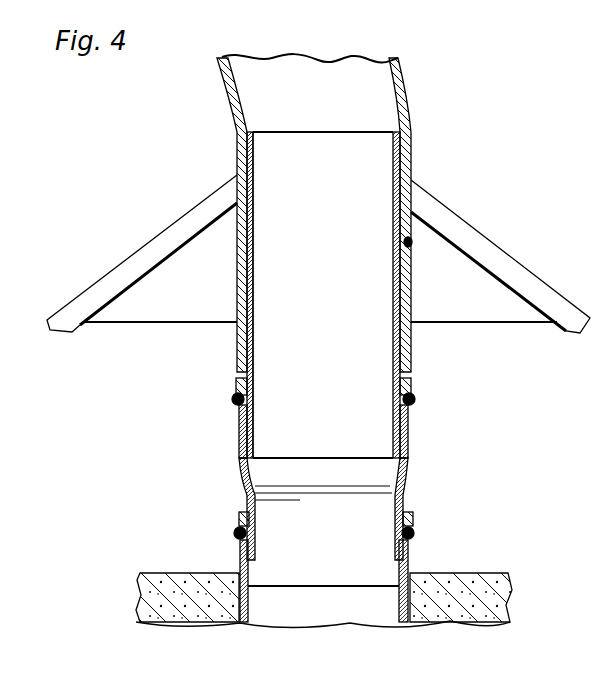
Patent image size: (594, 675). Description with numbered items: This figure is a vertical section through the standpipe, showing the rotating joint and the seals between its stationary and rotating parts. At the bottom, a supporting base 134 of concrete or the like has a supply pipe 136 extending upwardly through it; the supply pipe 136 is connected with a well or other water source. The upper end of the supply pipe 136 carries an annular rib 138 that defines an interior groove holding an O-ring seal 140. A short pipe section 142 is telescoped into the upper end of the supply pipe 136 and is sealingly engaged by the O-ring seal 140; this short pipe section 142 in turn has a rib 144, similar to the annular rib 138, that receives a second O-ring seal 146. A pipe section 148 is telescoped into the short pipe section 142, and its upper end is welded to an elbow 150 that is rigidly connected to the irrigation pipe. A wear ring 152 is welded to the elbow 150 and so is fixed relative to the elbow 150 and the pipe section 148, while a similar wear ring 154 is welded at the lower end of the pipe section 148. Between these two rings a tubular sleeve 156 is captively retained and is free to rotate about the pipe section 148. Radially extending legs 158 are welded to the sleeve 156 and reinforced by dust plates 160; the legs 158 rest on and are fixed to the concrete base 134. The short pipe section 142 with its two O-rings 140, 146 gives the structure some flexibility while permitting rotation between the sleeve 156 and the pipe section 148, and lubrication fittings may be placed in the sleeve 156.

The supporting base 134 is at (488, 588).
The supply pipe 136 is at (397, 603).
The annular rib 138 is at (412, 524).
The O-ring seal 140 is at (412, 542).
The short pipe section 142 is at (405, 475).
The rib 144 is at (411, 397).
The O-ring seal 146 is at (411, 412).
The pipe section 148 is at (253, 322).
The elbow 150 is at (403, 79).
The wear ring 152 is at (405, 160).
The wear ring 154 is at (411, 373).
The tubular sleeve 156 is at (405, 240).
The radially extending legs 158 is at (505, 262).
The dust plates 160 is at (518, 308).